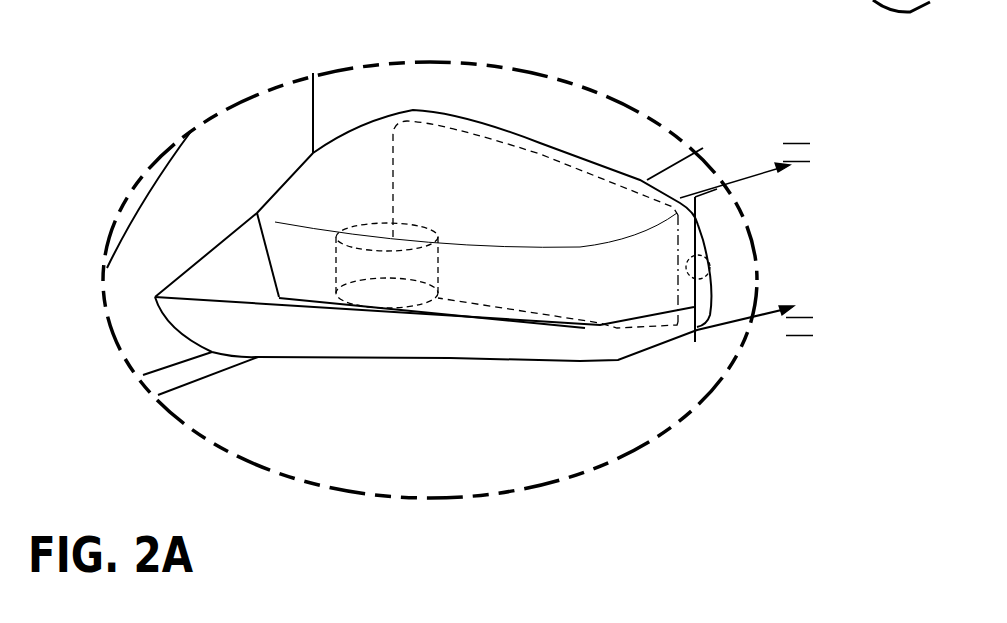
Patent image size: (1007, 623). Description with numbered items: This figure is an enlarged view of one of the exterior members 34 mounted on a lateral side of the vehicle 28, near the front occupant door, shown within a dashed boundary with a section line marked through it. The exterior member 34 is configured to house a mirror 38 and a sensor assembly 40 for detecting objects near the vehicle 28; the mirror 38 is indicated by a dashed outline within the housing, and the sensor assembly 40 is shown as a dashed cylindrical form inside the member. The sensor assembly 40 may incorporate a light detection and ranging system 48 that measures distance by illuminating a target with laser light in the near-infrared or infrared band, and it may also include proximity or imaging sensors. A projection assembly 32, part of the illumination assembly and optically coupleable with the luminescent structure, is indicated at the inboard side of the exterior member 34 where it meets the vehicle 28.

The vehicle 28 is at (197, 112).
The projection assembly 32 is at (703, 266).
The exterior member 34 is at (513, 168).
The mirror 38 is at (600, 182).
The sensor assembly 40 is at (350, 308).
The light detection and ranging (LIDAR) system 48 is at (388, 308).